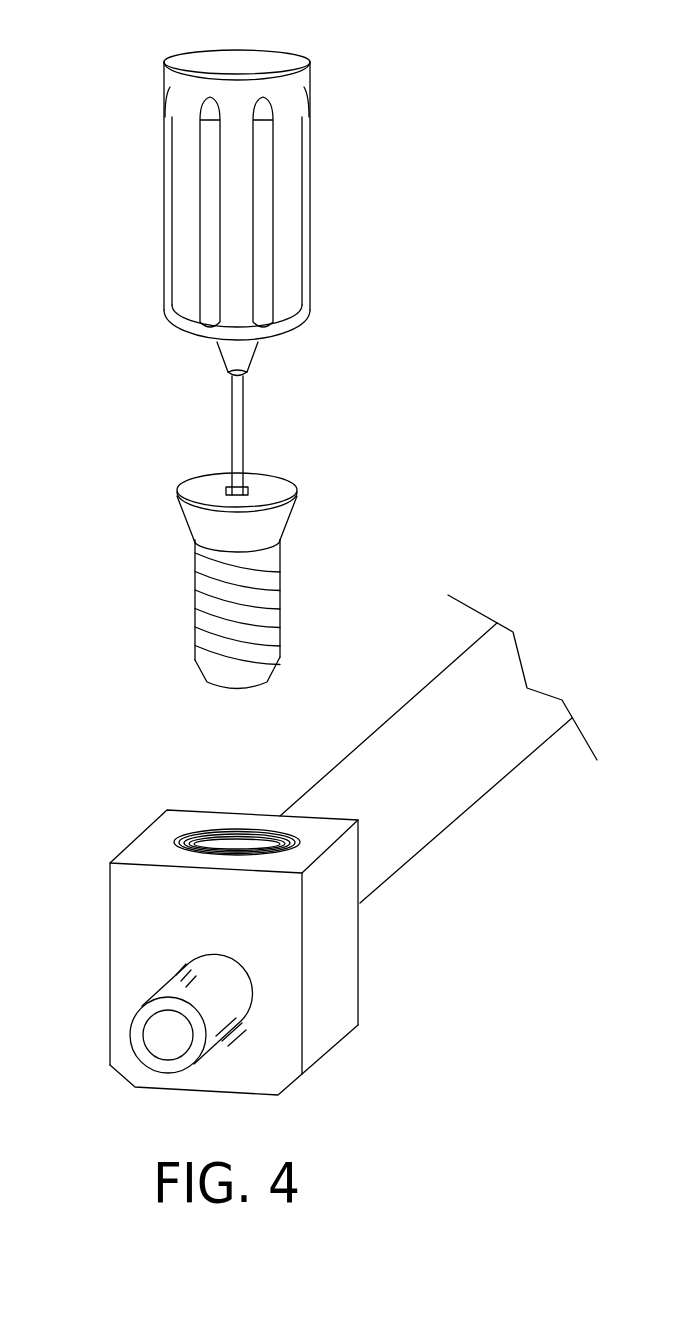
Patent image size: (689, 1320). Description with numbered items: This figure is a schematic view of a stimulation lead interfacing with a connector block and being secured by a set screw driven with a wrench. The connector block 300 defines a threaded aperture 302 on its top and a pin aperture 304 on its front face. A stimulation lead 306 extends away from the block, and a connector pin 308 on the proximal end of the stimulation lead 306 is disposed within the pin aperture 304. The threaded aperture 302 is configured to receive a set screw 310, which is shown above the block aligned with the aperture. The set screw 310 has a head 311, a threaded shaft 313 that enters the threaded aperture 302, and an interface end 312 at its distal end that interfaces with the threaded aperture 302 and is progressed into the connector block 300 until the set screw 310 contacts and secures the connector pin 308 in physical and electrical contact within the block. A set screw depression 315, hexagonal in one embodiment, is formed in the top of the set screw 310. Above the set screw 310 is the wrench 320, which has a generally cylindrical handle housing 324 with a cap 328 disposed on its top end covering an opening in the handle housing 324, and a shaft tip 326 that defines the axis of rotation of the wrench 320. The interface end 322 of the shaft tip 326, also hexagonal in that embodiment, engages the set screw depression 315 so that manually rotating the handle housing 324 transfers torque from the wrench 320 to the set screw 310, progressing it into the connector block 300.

The connector block 300 is at (210, 927).
The threaded aperture 302 is at (238, 838).
The pin aperture 304 is at (173, 968).
The stimulation lead 306 is at (477, 768).
The connector pin 308 is at (137, 1040).
The set screw 310 is at (209, 579).
The screw head 311 is at (298, 500).
The interface end 312 is at (273, 673).
The threaded shaft 313 is at (278, 607).
The set screw depression 315 is at (252, 492).
The wrench 320 is at (264, 259).
The interface end 322 is at (228, 477).
The handle housing 324 is at (307, 196).
The shaft tip 326 is at (235, 428).
The cap 328 is at (280, 63).